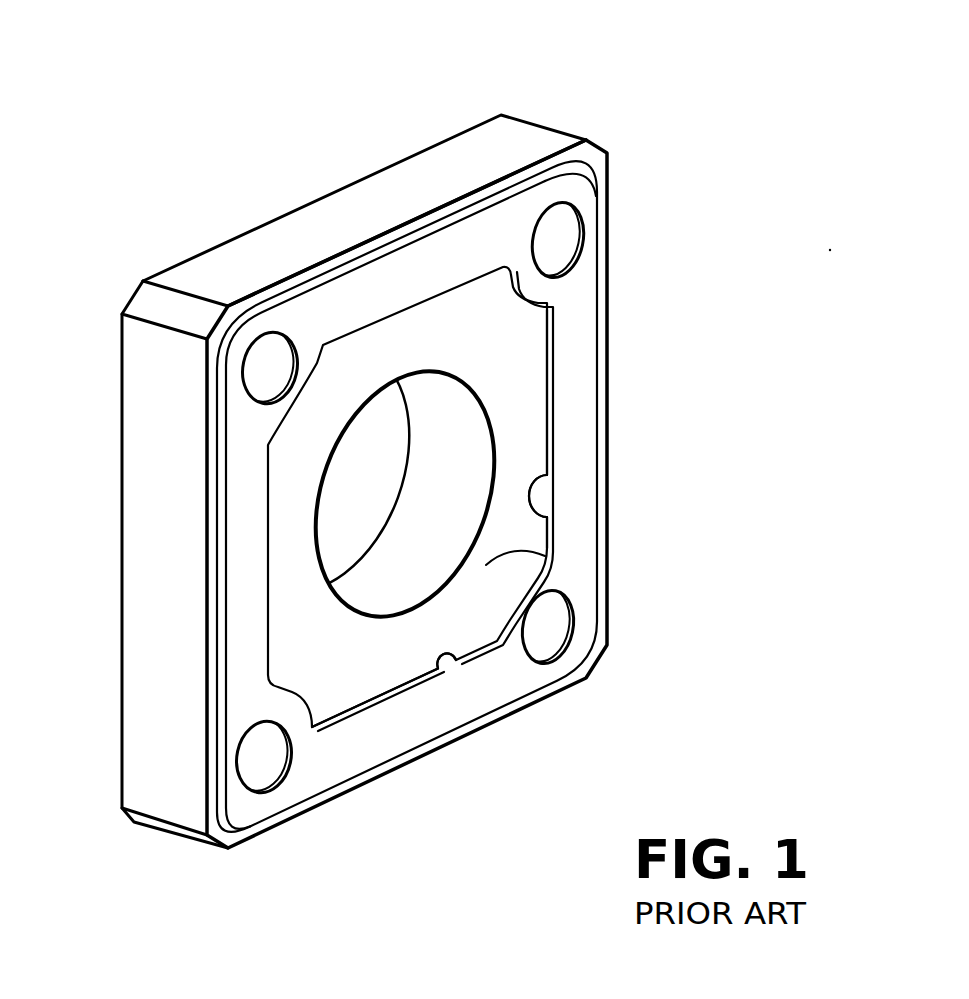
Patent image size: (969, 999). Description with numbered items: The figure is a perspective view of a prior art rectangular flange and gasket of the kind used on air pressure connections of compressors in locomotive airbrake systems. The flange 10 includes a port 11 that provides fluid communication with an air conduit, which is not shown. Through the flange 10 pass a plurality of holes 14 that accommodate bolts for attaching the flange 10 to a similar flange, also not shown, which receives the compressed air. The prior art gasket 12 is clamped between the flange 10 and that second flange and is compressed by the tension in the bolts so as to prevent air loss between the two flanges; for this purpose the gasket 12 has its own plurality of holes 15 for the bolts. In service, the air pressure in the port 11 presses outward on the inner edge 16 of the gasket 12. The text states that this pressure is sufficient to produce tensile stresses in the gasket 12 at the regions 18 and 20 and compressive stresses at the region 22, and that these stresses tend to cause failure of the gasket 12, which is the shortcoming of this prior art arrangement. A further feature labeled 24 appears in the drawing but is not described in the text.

The flange 10 is at (528, 130).
The port 11 is at (463, 458).
The gasket 12 is at (333, 300).
The holes 14 is at (563, 239).
The holes 15 is at (285, 368).
The inner edge 16 is at (548, 338).
The region 18 is at (498, 643).
The region 20 is at (467, 205).
The region 22 is at (550, 517).
The recessed surface 24 is at (446, 282).